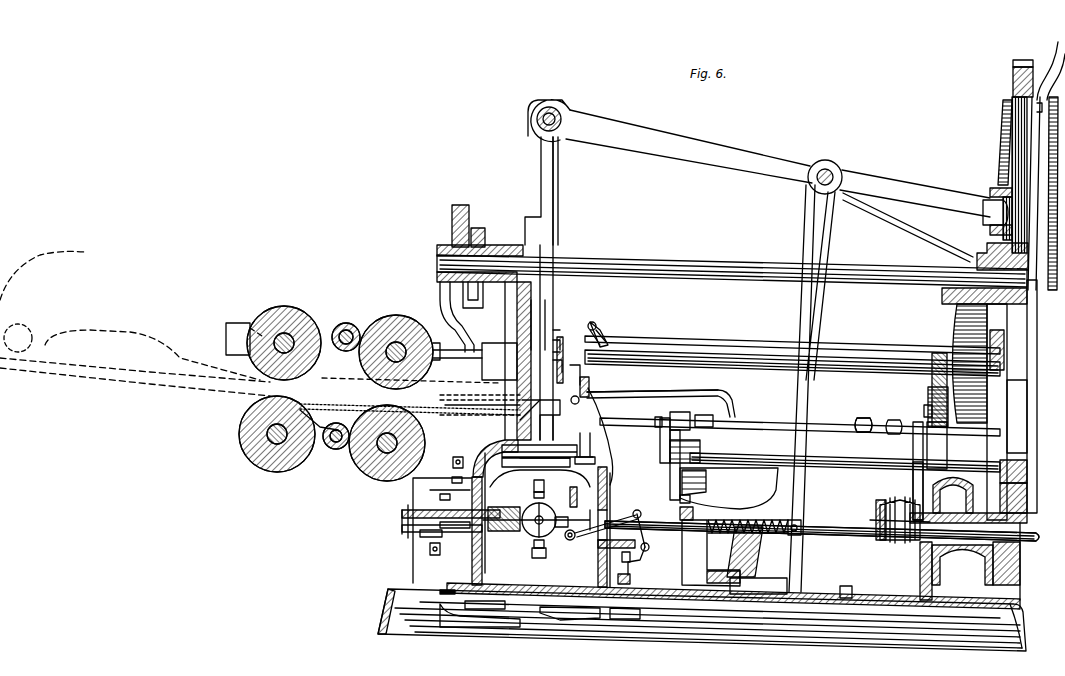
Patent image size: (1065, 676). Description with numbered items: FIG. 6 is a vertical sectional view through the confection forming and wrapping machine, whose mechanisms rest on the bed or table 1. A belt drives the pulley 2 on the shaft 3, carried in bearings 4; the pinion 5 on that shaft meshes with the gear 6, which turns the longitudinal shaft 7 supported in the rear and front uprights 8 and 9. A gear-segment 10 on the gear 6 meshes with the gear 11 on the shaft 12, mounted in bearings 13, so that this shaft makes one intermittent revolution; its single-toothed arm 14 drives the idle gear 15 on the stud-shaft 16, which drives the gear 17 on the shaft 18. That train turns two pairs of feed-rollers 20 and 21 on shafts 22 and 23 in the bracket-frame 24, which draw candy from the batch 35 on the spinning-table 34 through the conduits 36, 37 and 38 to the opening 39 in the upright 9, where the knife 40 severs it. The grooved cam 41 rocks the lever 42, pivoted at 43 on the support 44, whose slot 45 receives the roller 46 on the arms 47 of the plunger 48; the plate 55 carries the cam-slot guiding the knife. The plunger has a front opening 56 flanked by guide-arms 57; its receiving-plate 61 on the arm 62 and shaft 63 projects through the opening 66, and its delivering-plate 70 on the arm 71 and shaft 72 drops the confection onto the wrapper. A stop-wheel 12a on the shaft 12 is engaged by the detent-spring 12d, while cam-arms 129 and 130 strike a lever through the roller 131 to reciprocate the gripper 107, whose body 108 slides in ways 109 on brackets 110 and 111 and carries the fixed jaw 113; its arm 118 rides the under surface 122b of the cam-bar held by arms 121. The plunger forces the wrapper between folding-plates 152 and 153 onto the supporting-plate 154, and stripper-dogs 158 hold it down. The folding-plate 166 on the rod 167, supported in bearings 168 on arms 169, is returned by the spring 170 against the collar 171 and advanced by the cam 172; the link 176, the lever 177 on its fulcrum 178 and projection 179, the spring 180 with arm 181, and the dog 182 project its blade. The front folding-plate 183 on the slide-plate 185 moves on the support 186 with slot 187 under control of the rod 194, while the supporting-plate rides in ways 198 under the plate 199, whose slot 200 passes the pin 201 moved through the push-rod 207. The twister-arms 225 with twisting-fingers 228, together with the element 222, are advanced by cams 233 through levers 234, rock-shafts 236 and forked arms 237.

The bed or table 1 is at (388, 603).
The pulley 2 is at (960, 480).
The shaft 3 is at (1027, 520).
The bearings 4 is at (920, 558).
The pinion 5 is at (1027, 496).
The gear 6 is at (1020, 66).
The shaft 7 is at (876, 272).
The upright or bracket 8 is at (978, 248).
The upright or bracket 9 is at (520, 238).
The gear-segment 10 is at (985, 440).
The gear 11 is at (1027, 446).
The longitudinal shaft 12 is at (732, 452).
The stop-wheel 12a is at (913, 444).
The detent-spring 12d is at (913, 486).
The bearings 13 is at (770, 472).
The arm 14 is at (945, 445).
The gear 15 is at (930, 390).
The stud-shaft 16 is at (924, 410).
The gear 17 is at (940, 352).
The longitudinal shaft 18 is at (862, 376).
The feed-rollers 20 is at (278, 308).
The feed-rollers 21 is at (398, 320).
The shafts 22 is at (310, 312).
The shafts 23 is at (416, 330).
The bracket-frame 24 is at (302, 396).
The spinning-table 34 is at (142, 382).
The batch of candy 35 is at (130, 348).
The trough-like conduit 36 is at (355, 353).
The trough-like conduit 37 is at (319, 420).
The trough-like conduit 38 is at (450, 432).
The opening 39 is at (482, 398).
The knife or cutter 40 is at (560, 338).
The grooved cam 41 is at (988, 192).
The lever 42 is at (622, 128).
The pivot 43 is at (838, 170).
The support 44 is at (808, 204).
The slot 45 is at (562, 112).
The roller 46 is at (536, 112).
The arms 47 is at (547, 165).
The plunger 48 is at (552, 313).
The plate 55 is at (546, 347).
The opening 56 is at (475, 361).
The guide-arm 57 is at (520, 412).
The receiving-plate 61 is at (568, 396).
The arm 62 is at (597, 333).
The shaft 63 is at (596, 326).
The opening 66 is at (548, 363).
The delivering-plate 70 is at (541, 420).
The arm 71 is at (600, 412).
The shaft 72 is at (594, 392).
The gripper 107 is at (478, 462).
The slide or body 108 is at (600, 460).
The ways 109 is at (608, 476).
The bracket 110 is at (470, 484).
The bracket 111 is at (640, 500).
The fixed jaw 113 is at (558, 470).
The arm 118 is at (592, 450).
The arms 121 is at (610, 420).
The under surface of cam-bar 122b is at (624, 394).
The cam-arm 129 is at (866, 440).
The cam-arm 130 is at (660, 437).
The antifriction-roller 131 is at (504, 518).
The folding-plate 152 is at (536, 500).
The folding-plate 153 is at (546, 494).
The supporting-plate 154 is at (528, 532).
The stripper-dogs 158 is at (800, 548).
The folding-plate 166 is at (566, 540).
The reciprocating rod 167 is at (1034, 538).
The bearings 168 is at (700, 510).
The arms 169 is at (700, 570).
The spring 170 is at (775, 520).
The collar 171 is at (803, 525).
The cam 172 is at (1058, 52).
The link 176 is at (582, 541).
The lever 177 is at (650, 548).
The fulcrum 178 is at (622, 575).
The projection 179 is at (630, 522).
The spring 180 is at (655, 578).
The arm 181 is at (650, 560).
The dog or projection 182 is at (698, 548).
The front folding-plate 183 is at (538, 494).
The slide-plate 185 is at (451, 498).
The support 186 is at (410, 512).
The slot 187 is at (450, 482).
The rod 194 is at (742, 340).
The ways 198 is at (455, 532).
The plate 199 is at (412, 528).
The slot 200 is at (431, 539).
The pin 201 is at (410, 535).
The push-rod 207 is at (680, 392).
The bevel gear 222 is at (889, 512).
The twister-arms 225 is at (536, 546).
The twisting-finger 228 is at (541, 561).
The cams 233 is at (452, 205).
The lever 234 is at (442, 292).
The rock-shaft 236 is at (480, 619).
The arm 237 is at (590, 615).